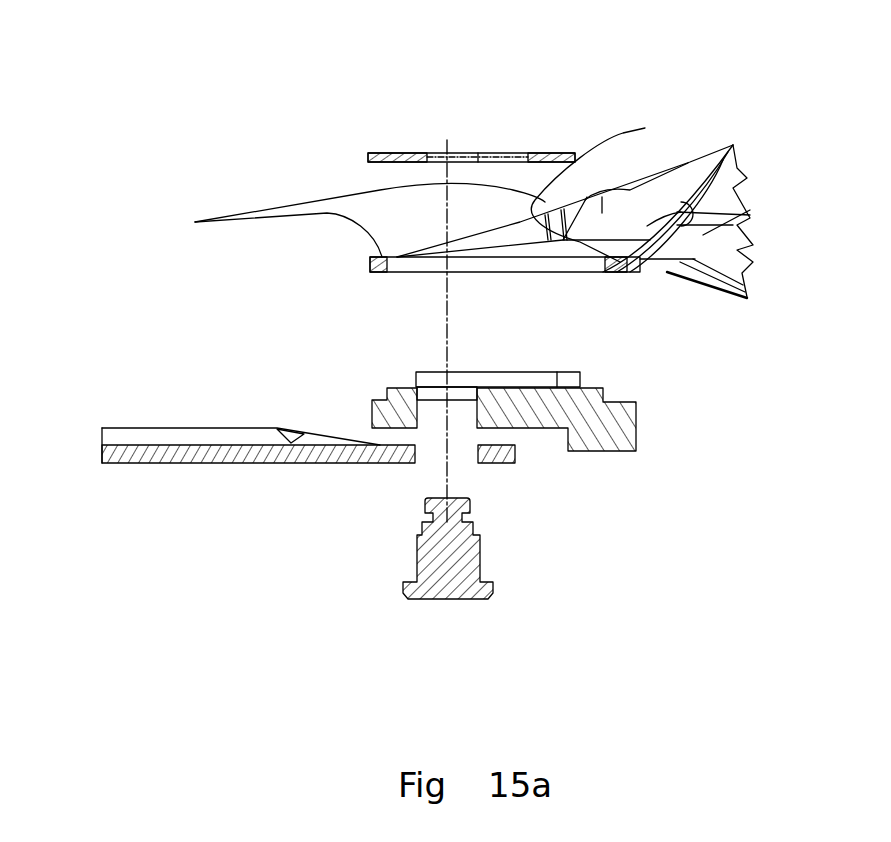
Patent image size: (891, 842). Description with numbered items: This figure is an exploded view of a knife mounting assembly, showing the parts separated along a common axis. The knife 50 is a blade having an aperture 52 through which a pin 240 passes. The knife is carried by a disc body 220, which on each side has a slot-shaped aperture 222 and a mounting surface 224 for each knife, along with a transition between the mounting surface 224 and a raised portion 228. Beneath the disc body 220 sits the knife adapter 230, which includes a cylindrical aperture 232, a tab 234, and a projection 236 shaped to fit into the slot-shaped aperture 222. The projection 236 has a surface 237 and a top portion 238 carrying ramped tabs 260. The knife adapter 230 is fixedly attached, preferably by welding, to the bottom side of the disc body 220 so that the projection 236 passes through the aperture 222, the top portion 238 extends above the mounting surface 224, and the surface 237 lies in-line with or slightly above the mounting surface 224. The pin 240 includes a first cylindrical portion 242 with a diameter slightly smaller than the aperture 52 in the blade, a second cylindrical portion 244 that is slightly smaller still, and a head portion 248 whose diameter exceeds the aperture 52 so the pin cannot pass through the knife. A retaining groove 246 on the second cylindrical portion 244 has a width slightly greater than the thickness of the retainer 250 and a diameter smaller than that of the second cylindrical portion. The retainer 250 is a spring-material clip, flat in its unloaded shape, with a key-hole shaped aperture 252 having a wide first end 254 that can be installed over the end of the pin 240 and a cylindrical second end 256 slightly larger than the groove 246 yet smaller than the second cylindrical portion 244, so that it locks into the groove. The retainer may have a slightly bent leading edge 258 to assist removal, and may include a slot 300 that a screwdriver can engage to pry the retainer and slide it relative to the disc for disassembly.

The knife 50 is at (140, 453).
The aperture 52 is at (477, 455).
The disc body 220 is at (745, 218).
The slot-shaped aperture 222 is at (572, 264).
The mounting surface 224 is at (337, 220).
The raised portion 228 is at (613, 187).
The knife adapter 230 is at (528, 430).
The cylindrical aperture 232 is at (423, 399).
The tab 234 is at (588, 450).
The projection 236 is at (634, 438).
The surface 237 is at (398, 388).
The top portion 238 is at (445, 372).
The pin 240 is at (437, 600).
The first cylindrical portion 242 is at (414, 568).
The second cylindrical portion 244 is at (419, 528).
The retaining groove 246 is at (423, 517).
The head portion 248 is at (473, 600).
The retainer 250 is at (362, 153).
The key-hole shaped aperture 252 is at (480, 153).
The first end 254 is at (517, 153).
The second end 256 is at (435, 153).
The leading edge 258 is at (573, 153).
The ramped tabs 260 is at (518, 387).
The slot 300 is at (400, 153).